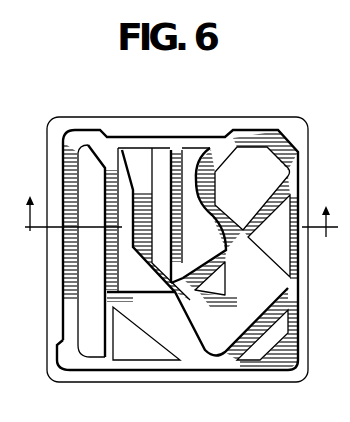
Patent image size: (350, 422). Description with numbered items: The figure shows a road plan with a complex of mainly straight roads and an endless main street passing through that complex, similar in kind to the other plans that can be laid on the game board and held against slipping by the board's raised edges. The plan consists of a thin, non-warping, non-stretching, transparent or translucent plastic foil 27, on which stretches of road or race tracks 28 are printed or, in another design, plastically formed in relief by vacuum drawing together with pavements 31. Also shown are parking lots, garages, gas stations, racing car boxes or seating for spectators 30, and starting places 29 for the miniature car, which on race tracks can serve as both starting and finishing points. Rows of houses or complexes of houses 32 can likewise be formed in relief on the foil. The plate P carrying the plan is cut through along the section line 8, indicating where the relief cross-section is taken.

The plastic foil 27 is at (121, 114).
The stretches of road or race tracks 28 is at (74, 137).
The starting places 29 is at (73, 363).
The parking lots, garages, gas stations, racing car boxes or seating for spectators 30 is at (268, 362).
The pavements 31 is at (90, 254).
The rows of houses or complexes of houses 32 is at (282, 246).
The plate P is at (285, 357).
The section line 8- 8 is at (178, 215).